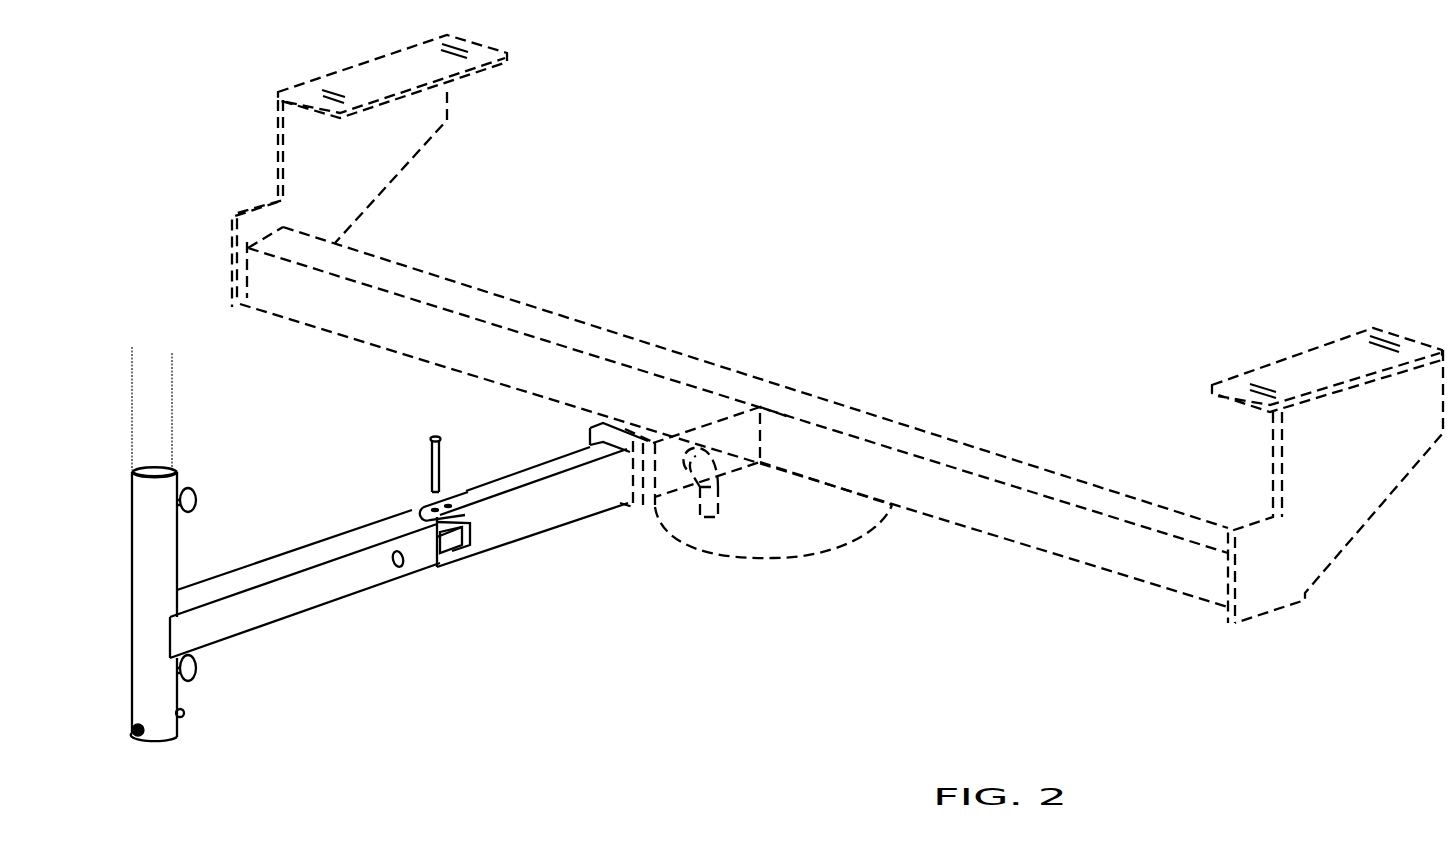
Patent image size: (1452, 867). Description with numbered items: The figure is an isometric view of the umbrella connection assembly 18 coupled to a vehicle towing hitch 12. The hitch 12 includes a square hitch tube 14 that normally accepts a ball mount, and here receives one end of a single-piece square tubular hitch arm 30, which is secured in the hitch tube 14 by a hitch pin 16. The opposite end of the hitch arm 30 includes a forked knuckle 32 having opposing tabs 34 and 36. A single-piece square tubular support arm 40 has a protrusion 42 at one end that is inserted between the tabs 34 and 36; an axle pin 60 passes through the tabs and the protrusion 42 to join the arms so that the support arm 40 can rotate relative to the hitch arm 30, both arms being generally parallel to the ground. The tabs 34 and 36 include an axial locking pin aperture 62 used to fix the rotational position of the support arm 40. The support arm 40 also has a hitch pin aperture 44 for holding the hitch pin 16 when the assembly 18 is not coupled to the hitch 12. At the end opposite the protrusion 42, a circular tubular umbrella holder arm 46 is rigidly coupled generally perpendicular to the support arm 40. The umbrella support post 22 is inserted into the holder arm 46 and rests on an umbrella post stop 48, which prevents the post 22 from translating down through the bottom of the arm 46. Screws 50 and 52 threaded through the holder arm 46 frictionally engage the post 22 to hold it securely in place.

The towing hitch 12 is at (792, 562).
The square hitch tube 14 is at (652, 513).
The hitch pin 16 is at (722, 494).
The umbrella connection assembly 18 is at (296, 400).
The support post 22 is at (143, 397).
The hitch arm 30 is at (532, 467).
The forked knuckle 32 is at (460, 570).
The tab 34 is at (414, 506).
The tab 36 is at (472, 565).
The support arm 40 is at (304, 617).
The protrusion 42 is at (448, 565).
The hitch pin aperture 44 is at (401, 567).
The umbrella holder arm 46 is at (135, 552).
The umbrella post stop 48 is at (184, 714).
The screw 50 is at (198, 497).
The screw 52 is at (197, 667).
The axle pin 60 is at (427, 483).
The axial locking pin aperture 62 is at (449, 503).